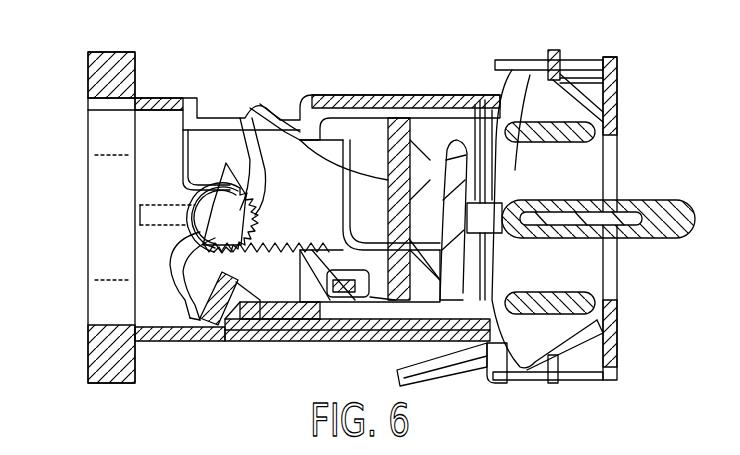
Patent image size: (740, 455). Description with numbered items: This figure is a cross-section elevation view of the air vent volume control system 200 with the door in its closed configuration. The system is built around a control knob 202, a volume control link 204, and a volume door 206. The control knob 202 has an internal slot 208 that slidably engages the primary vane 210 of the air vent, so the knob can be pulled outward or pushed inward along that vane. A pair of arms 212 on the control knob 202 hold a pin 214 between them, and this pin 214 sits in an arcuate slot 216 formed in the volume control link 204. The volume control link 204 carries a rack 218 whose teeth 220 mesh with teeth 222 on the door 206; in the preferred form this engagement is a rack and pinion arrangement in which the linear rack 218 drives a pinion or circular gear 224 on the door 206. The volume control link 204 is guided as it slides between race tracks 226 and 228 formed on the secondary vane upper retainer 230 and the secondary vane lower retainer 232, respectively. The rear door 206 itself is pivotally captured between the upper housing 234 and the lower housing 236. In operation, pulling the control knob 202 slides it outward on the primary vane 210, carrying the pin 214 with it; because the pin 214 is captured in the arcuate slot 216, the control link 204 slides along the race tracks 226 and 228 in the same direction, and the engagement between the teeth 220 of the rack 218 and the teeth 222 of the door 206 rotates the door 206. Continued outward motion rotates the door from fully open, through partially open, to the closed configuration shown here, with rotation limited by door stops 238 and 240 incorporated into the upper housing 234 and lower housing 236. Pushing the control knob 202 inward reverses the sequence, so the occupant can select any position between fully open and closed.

The air vent volume control system 200 is at (418, 66).
The control knob 202 is at (650, 200).
The volume control link 204 is at (296, 118).
The volume door 206 is at (238, 262).
The internal slot 208 is at (530, 199).
The primary vane 210 is at (577, 199).
The arms 212 is at (527, 72).
The pin 214 is at (397, 173).
The arcuate slot 216 is at (390, 295).
The rack 218 is at (207, 305).
The teeth 220 is at (330, 300).
The teeth 222 is at (255, 140).
The circular gear 224 is at (188, 215).
The race track 226 is at (484, 125).
The race track 228 is at (497, 303).
The secondary vane upper retainer 230 is at (415, 110).
The secondary vane lower retainer 232 is at (279, 323).
The upper housing 234 is at (172, 104).
The lower housing 236 is at (122, 333).
The door stop 238 is at (183, 122).
The door stop 240 is at (152, 322).